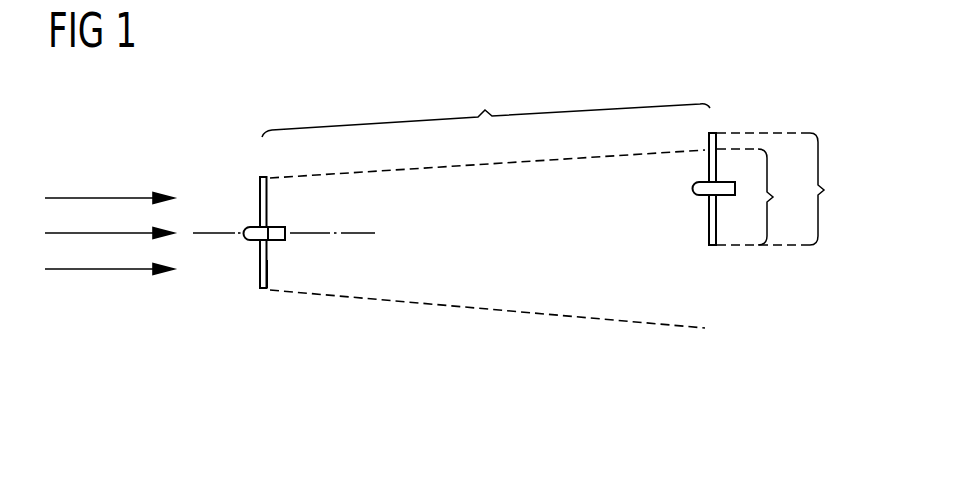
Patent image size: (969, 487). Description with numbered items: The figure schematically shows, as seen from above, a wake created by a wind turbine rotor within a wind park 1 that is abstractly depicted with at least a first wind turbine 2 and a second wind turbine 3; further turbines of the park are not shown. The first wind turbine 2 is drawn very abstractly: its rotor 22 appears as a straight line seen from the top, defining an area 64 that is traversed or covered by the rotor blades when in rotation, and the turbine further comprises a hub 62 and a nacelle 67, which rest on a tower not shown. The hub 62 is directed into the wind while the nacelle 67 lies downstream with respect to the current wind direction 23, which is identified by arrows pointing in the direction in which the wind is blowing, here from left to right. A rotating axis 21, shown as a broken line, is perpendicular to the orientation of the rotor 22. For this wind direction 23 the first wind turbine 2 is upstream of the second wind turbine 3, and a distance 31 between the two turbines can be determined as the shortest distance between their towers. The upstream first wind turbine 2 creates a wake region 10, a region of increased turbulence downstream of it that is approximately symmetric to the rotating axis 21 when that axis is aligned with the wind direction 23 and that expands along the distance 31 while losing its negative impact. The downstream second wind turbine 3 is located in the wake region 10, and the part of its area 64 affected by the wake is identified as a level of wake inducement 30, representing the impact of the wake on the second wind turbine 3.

The wind park 1 is at (190, 300).
The first wind turbine 2 is at (240, 186).
The second wind turbine 3 is at (698, 212).
The wake region 10 is at (472, 297).
The rotating axis 21 is at (372, 233).
The rotor 22 is at (268, 277).
The current wind direction 23 is at (77, 233).
The level of wake inducement 30 is at (781, 197).
The distance 31 is at (486, 107).
The hub 62 is at (250, 240).
The area 64 is at (834, 189).
The nacelle 67 is at (292, 237).